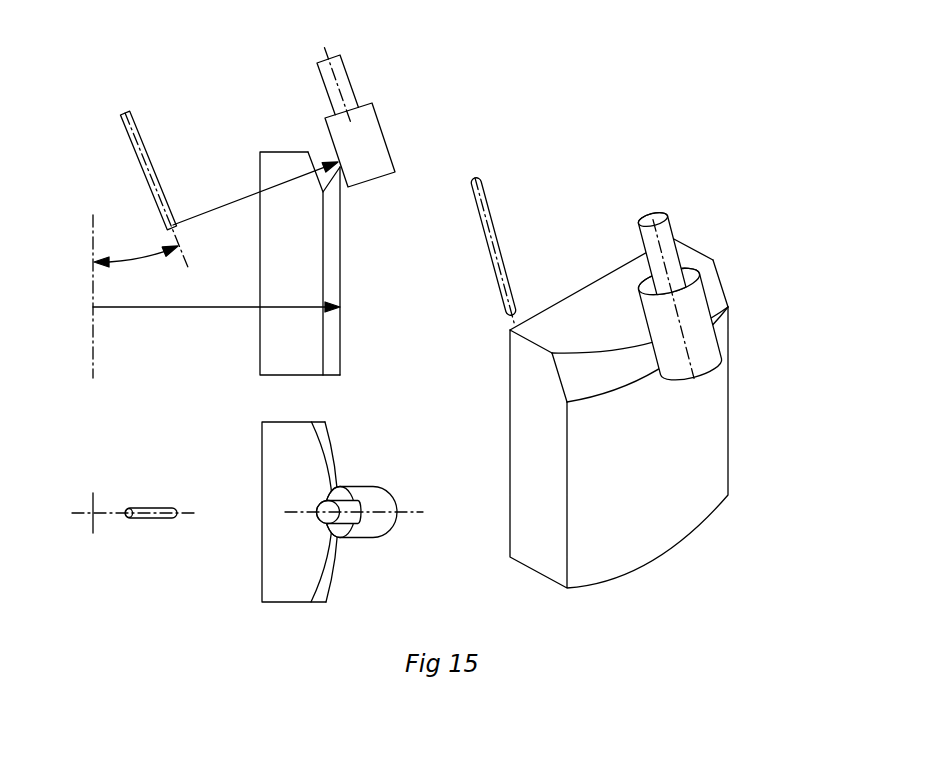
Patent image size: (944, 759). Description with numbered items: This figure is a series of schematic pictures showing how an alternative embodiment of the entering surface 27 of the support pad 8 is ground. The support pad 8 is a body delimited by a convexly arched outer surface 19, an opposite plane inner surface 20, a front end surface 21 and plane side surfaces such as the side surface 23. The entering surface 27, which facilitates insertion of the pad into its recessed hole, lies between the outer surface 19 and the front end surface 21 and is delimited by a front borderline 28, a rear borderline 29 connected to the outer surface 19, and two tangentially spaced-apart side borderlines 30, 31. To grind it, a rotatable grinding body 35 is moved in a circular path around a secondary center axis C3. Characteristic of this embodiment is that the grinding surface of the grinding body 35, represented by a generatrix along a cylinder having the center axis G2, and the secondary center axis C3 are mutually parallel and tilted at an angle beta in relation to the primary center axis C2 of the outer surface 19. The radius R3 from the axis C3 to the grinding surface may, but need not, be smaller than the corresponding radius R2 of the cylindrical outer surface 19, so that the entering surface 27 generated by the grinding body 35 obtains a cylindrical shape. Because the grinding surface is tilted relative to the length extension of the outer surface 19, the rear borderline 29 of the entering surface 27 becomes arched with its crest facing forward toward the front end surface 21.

The support pad 8 is at (240, 473).
The outer surface 19 is at (337, 233).
The inner surface 20 is at (260, 322).
The front end surface 21 is at (317, 478).
The side surface 23 is at (308, 267).
The entering surface 27 is at (322, 158).
The front borderline 28 is at (607, 341).
The rear borderline 29 is at (622, 367).
The side borderline 30 is at (560, 372).
The side borderline 31 is at (725, 285).
The grinding body 35 is at (398, 113).
The center axis of grinding body G2 is at (497, 301).
The primary center axis C2 is at (93, 215).
The secondary center axis C3 is at (311, 324).
The radius of curvature of outer surface R2 is at (216, 297).
The radius of curvature of entering surface R3 is at (255, 193).